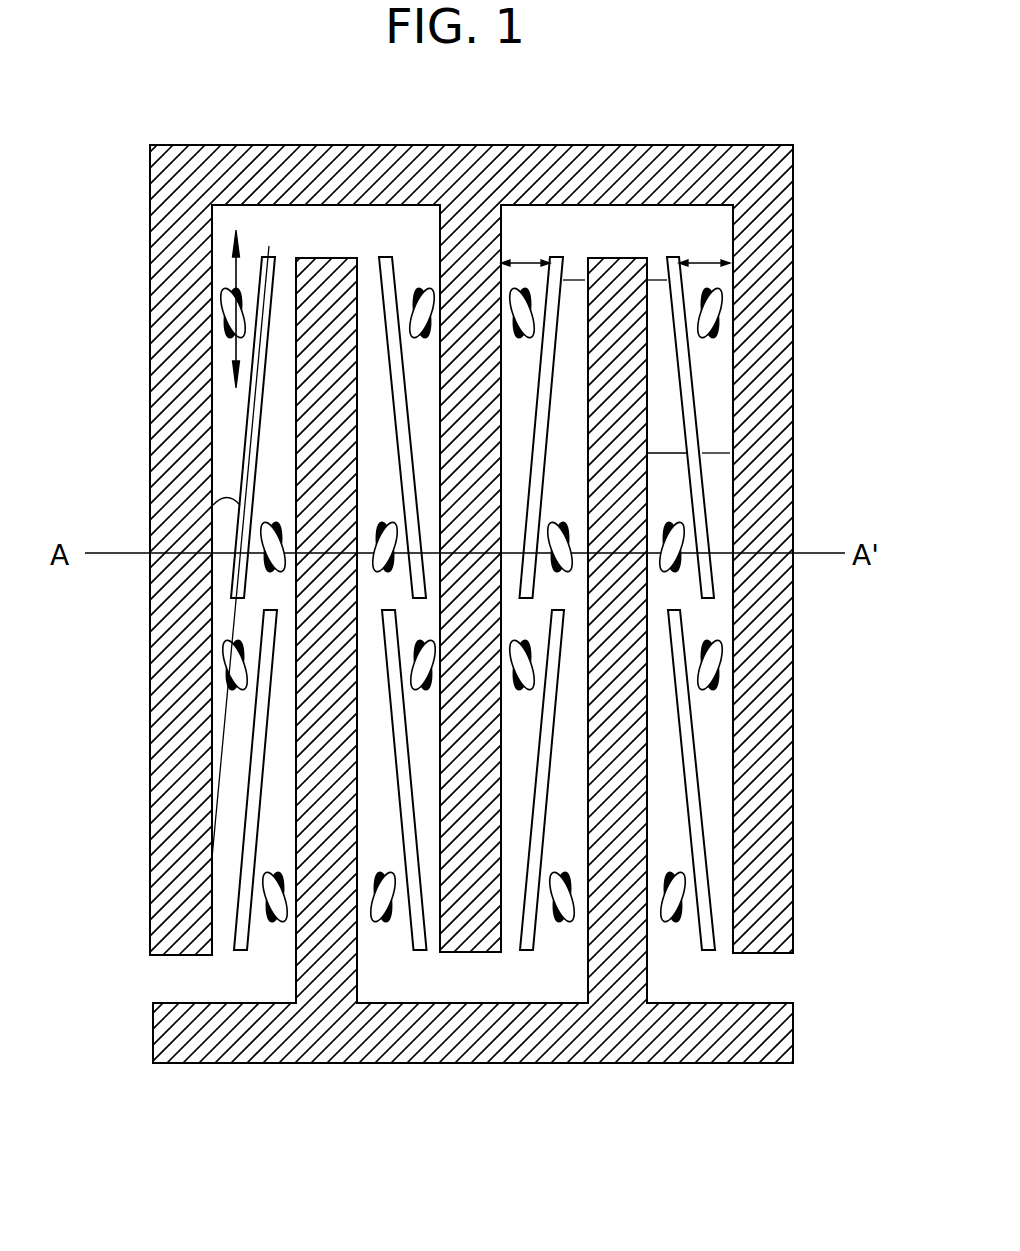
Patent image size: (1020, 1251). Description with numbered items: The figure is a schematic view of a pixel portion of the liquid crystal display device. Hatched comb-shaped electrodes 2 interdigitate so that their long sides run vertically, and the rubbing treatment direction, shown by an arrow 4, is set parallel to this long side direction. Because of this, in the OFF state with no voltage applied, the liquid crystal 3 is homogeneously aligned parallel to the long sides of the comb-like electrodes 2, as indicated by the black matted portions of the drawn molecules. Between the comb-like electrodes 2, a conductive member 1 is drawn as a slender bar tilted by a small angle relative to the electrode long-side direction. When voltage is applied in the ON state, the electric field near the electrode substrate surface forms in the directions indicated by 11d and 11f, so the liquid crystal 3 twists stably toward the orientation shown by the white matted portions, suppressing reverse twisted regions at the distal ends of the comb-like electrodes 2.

The conductive member 1 is at (700, 770).
The comb-shaped electrode 2 is at (778, 903).
The liquid crystal 3 is at (726, 652).
The arrow 4 is at (235, 272).
The electric field direction 11d is at (575, 280).
The electric field direction 11f is at (665, 453).